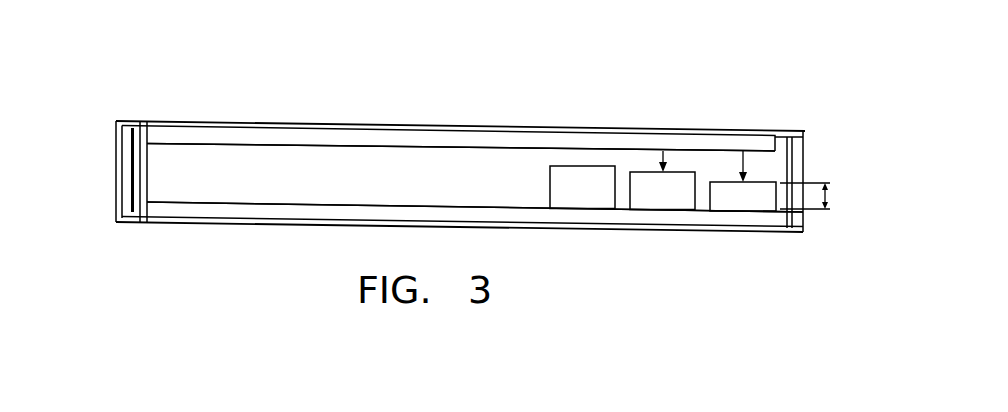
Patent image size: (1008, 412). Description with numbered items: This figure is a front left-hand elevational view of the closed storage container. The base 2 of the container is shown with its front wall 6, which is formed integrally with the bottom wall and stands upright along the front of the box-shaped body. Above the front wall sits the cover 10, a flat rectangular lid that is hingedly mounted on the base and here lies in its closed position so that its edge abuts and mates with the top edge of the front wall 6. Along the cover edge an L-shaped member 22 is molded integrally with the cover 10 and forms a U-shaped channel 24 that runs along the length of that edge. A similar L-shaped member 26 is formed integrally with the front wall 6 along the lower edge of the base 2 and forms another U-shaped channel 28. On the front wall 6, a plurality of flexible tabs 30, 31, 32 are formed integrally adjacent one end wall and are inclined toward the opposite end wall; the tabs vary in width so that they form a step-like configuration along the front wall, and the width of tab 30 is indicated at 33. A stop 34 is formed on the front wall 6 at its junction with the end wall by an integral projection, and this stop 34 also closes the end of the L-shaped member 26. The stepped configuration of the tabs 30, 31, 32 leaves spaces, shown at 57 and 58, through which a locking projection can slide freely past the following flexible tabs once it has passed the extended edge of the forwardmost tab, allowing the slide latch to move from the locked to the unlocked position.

The base 2 is at (540, 232).
The front wall 6 is at (243, 182).
The cover 10 is at (540, 129).
The L-shaped member 22 is at (268, 140).
The U-shaped channel 24 is at (198, 147).
The L-shaped member 26 is at (285, 212).
The U-shaped channel 28 is at (187, 201).
The flexible tab 30 is at (748, 202).
The flexible tab 31 is at (667, 199).
The flexible tab 32 is at (580, 200).
The width of tab 33 is at (828, 196).
The stop 34 is at (147, 171).
The space 57 is at (664, 157).
The space 58 is at (745, 159).